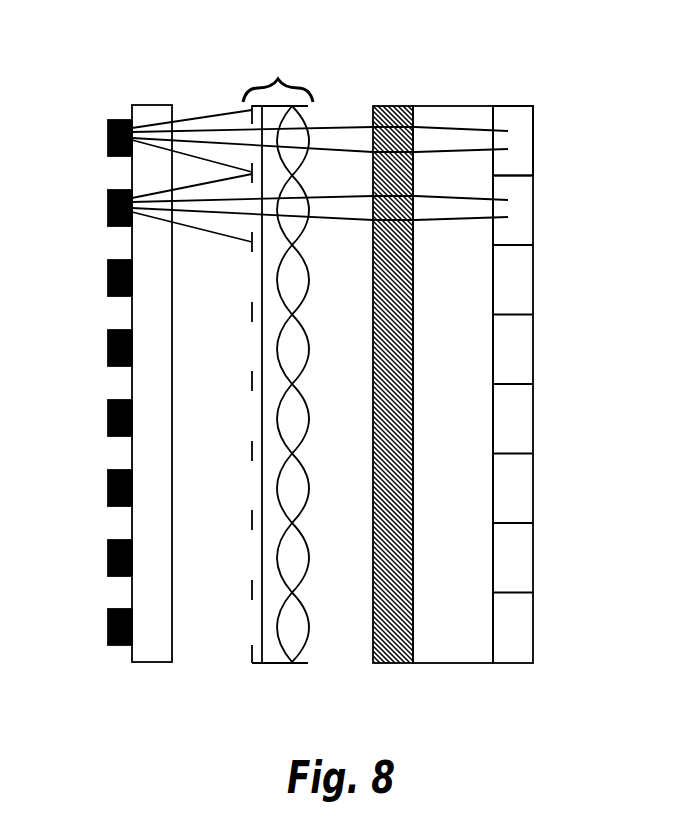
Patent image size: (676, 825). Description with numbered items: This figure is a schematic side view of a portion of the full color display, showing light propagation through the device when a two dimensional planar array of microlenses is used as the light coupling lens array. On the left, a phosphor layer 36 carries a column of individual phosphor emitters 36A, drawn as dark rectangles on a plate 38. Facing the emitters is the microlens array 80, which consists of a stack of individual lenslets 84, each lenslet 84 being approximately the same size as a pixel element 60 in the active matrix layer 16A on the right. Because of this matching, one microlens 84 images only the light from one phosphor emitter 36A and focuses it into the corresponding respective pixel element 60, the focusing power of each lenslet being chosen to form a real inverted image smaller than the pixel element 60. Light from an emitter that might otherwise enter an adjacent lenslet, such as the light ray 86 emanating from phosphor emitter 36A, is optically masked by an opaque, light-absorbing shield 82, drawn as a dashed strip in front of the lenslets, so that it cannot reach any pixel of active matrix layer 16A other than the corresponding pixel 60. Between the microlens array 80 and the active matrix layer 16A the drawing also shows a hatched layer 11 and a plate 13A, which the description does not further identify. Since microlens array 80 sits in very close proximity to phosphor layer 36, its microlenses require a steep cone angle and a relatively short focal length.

The transparent substrate plate 38 is at (149, 104).
The phosphor layer 36 is at (117, 645).
The phosphor emitter 36A is at (107, 137).
The light ray 86 is at (187, 161).
The opaque light-absorbing shield 82 is at (254, 665).
The lenslet 84 is at (310, 138).
The microlens array 80 is at (278, 79).
The light absorbing layer 11 is at (393, 105).
The light guide plate 13A is at (450, 105).
The active matrix layer 16A is at (515, 105).
The pixel element 60 is at (535, 145).